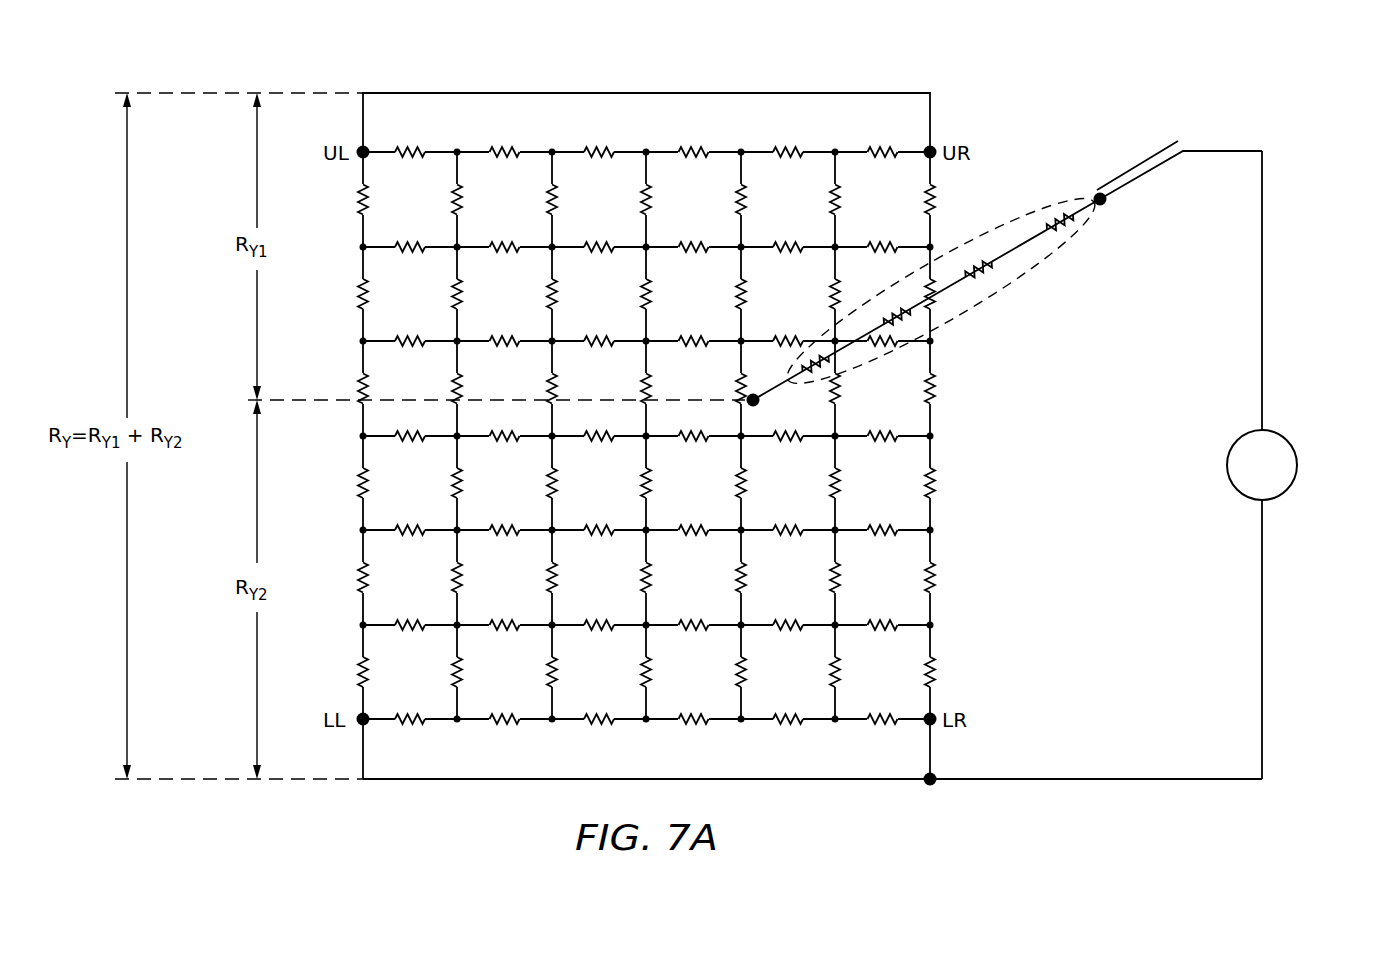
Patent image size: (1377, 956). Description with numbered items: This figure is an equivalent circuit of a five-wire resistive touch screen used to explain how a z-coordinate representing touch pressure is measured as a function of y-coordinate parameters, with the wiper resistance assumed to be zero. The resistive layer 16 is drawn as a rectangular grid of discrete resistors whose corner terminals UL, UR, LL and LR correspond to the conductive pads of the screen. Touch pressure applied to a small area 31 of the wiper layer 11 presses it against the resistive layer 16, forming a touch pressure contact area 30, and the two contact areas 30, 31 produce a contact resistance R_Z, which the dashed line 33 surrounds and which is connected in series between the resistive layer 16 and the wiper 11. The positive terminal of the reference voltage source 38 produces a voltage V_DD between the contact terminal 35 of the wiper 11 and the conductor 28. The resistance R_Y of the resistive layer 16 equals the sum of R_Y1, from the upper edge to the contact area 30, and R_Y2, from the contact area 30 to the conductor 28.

The wiper layer 11 is at (1122, 175).
The resistive layer 16 is at (592, 144).
The conductor 28 is at (447, 780).
The touch pressure contact area 30 is at (754, 410).
The small area of wiper layer 31 is at (1108, 211).
The dashed line 33 is at (1043, 208).
The contact terminal 35 is at (1177, 142).
The reference voltage source 38 is at (1297, 466).